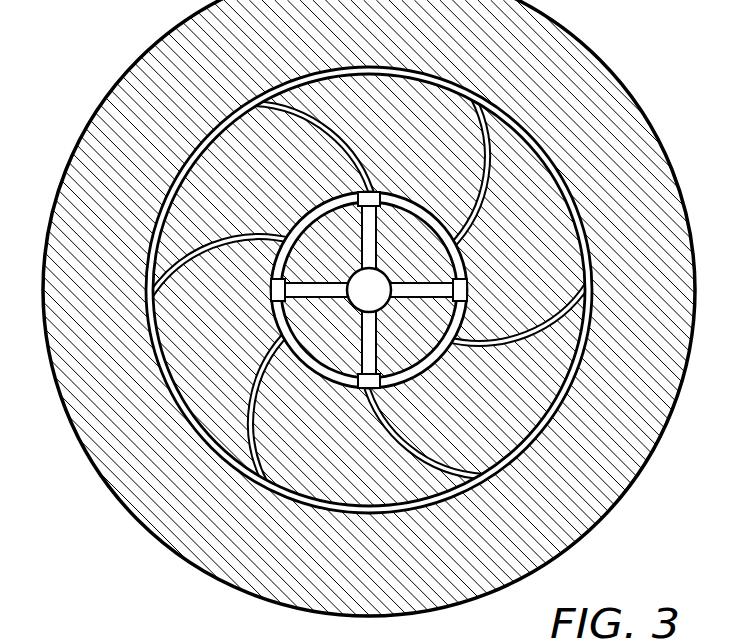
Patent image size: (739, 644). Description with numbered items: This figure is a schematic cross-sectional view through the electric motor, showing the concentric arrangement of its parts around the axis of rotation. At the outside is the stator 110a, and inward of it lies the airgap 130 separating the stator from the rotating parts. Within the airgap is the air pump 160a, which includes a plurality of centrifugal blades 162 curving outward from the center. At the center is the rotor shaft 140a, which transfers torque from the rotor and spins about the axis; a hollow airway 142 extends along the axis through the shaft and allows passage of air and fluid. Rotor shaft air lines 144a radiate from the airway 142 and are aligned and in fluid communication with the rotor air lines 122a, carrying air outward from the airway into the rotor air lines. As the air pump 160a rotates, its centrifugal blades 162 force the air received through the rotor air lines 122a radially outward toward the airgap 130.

The stator 110a is at (397, 22).
The airgap 130 is at (390, 68).
The air pump 160a is at (368, 290).
The centrifugal blades 162 is at (325, 141).
The rotor shaft 140a is at (435, 263).
The airway 142 is at (367, 294).
The rotor shaft air lines 144a is at (367, 233).
The rotor air lines 122a is at (378, 193).